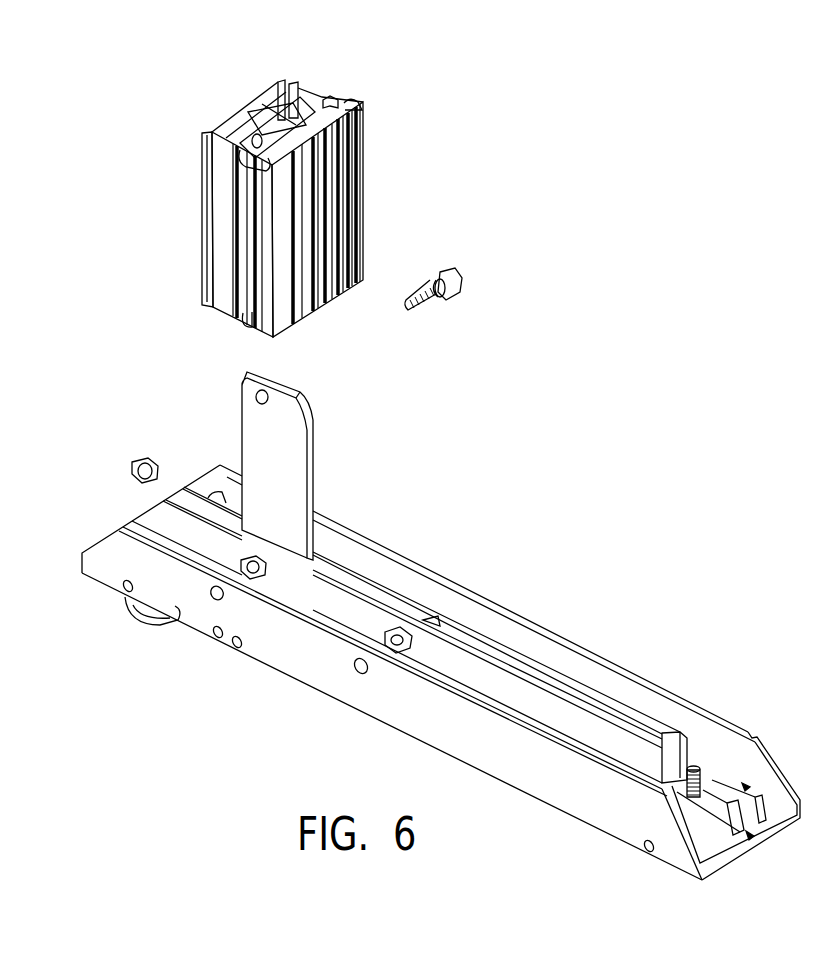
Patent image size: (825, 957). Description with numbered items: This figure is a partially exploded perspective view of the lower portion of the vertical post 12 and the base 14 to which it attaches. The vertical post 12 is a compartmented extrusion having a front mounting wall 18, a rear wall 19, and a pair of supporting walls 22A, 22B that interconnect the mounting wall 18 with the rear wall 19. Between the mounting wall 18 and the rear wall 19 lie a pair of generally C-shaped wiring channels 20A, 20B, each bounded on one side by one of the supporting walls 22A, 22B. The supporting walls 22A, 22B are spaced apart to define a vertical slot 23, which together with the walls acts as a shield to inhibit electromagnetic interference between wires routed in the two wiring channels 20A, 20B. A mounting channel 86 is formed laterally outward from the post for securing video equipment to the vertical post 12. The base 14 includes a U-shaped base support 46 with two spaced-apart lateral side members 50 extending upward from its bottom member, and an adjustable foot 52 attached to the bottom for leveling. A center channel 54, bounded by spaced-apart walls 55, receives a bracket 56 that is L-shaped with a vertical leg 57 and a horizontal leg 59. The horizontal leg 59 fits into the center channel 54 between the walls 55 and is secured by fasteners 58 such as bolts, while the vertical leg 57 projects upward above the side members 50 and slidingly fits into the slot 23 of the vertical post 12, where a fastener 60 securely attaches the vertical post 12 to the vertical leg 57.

The vertical post 12 is at (279, 196).
The front mounting wall 18 is at (345, 195).
The rear wall 19 is at (258, 100).
The wiring channel 20A is at (225, 153).
The wiring channel 20B is at (310, 115).
The supporting wall 22A is at (290, 147).
The supporting wall 22B is at (300, 107).
The vertical slot 23 is at (267, 120).
The mounting channel 86 is at (347, 100).
The fastener 60 is at (455, 282).
The base 14 is at (650, 580).
The U-shaped base support 46 is at (647, 670).
The lateral side member 50 is at (560, 787).
The adjustable foot 52 is at (150, 630).
The center channel 54 is at (463, 637).
The wall 55 is at (503, 652).
The bracket 56 is at (322, 466).
The vertical leg 57 is at (300, 498).
The fastener 58 is at (415, 650).
The horizontal leg 59 is at (383, 597).